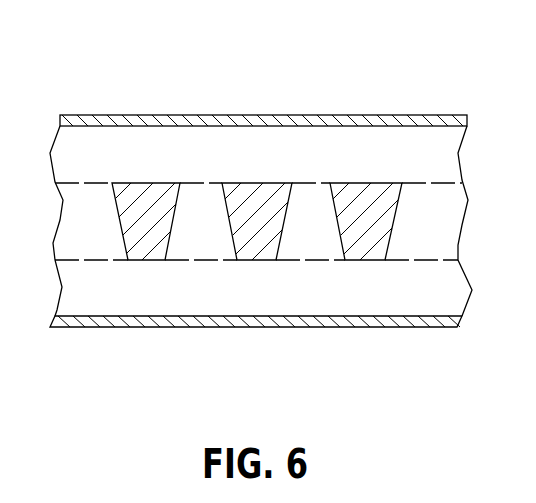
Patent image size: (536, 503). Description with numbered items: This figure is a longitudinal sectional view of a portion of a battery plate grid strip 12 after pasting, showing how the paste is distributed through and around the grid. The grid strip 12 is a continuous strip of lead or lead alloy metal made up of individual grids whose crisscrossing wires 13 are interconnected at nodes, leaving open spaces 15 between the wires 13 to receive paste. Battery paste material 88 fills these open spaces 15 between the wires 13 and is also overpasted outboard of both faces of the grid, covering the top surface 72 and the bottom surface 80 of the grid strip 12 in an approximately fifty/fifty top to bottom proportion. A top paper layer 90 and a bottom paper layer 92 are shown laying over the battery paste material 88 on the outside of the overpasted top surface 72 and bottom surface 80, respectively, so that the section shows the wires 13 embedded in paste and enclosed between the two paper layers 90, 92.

The grid strip 12 is at (261, 205).
The top paper layer 90 is at (310, 115).
The bottom paper layer 92 is at (137, 327).
The top surface 72 is at (147, 183).
The open spaces 15 is at (200, 227).
The wires 13 is at (147, 227).
The bottom surface 80 is at (370, 253).
The battery paste material 88 is at (335, 299).